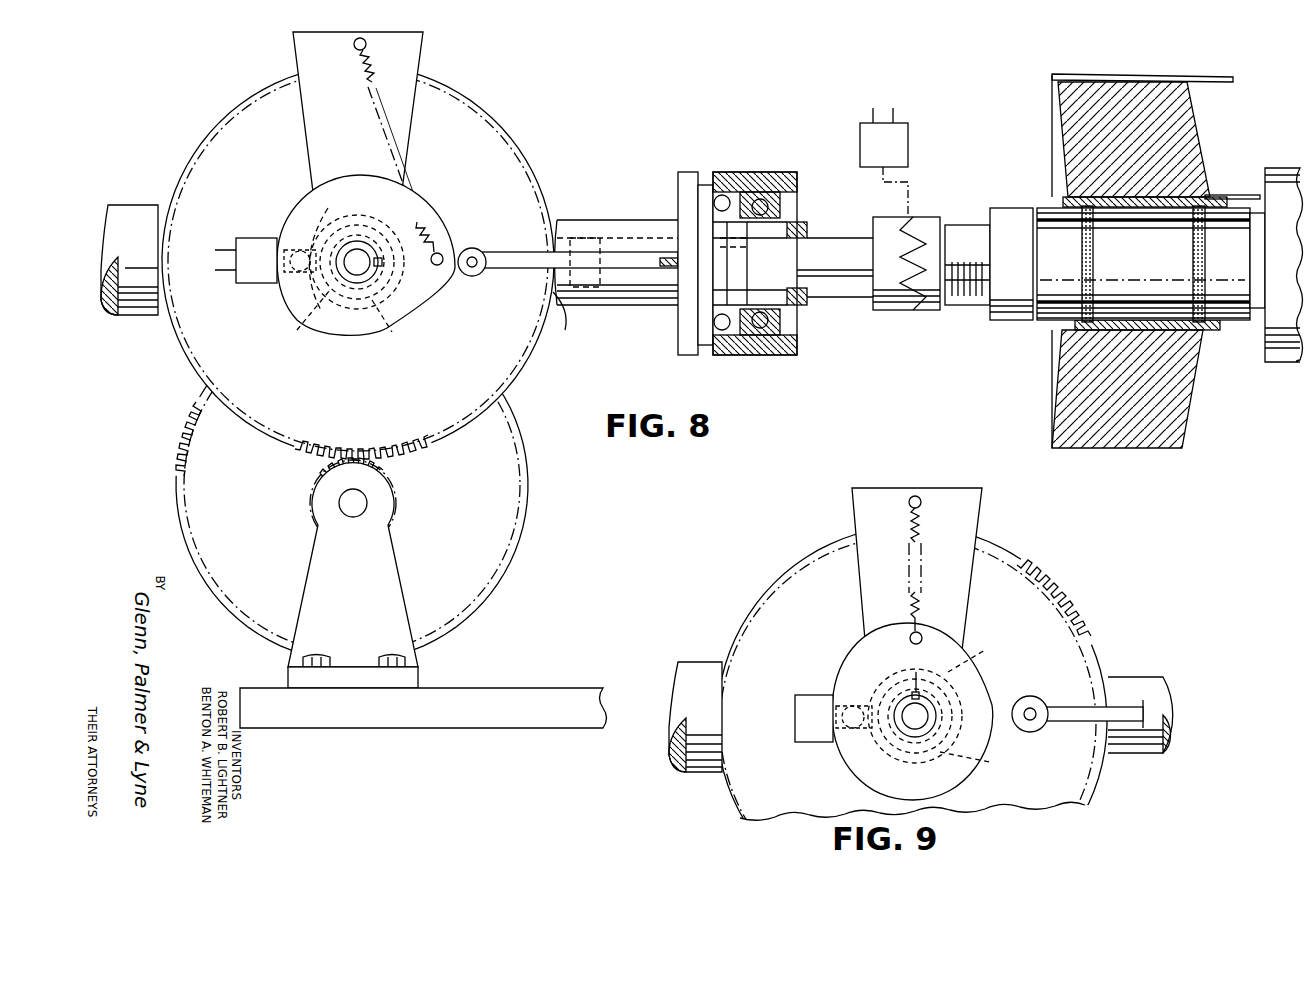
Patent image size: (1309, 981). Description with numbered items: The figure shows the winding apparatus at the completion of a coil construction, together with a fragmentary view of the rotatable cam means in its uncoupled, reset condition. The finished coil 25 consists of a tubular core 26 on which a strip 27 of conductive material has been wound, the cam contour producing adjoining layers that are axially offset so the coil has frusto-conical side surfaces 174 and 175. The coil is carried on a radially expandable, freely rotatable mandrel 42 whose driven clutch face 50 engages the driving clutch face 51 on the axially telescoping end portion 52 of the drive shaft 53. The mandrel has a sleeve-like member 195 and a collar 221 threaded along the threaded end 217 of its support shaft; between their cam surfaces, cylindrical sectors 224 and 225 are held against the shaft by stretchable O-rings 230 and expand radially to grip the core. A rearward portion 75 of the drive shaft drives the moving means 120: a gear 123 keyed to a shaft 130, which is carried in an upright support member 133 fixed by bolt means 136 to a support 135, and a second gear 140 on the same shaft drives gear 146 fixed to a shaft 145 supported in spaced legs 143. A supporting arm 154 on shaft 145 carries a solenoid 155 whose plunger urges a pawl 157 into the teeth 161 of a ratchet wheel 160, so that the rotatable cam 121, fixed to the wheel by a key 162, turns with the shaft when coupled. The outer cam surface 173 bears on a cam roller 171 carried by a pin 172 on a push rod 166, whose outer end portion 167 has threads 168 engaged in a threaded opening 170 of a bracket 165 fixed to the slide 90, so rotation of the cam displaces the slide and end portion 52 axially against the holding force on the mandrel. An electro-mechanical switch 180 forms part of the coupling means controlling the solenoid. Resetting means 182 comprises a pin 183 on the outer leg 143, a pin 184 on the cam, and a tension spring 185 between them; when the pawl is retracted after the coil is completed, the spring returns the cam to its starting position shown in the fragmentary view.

In FIG. 8, the coil 25 is at (1206, 432).
In FIG. 8, the core element 26 is at (1070, 327).
In FIG. 8, the strip 27 is at (1130, 448).
In FIG. 8, the mandrel 42 is at (1247, 163).
In FIG. 8, the driven clutch means 50 is at (940, 215).
In FIG. 8, the driving clutch means 51 is at (920, 300).
In FIG. 8, the axially telescoping end portion 52 is at (855, 240).
In FIG. 8, the drive shaft 53 is at (625, 222).
In FIG. 9, the drive shaft 53 is at (1155, 680).
In FIG. 8, the rearward portion 75 is at (140, 205).
In FIG. 9, the rearward portion 75 is at (700, 662).
In FIG. 8, the slide 90 is at (760, 172).
In FIG. 8, the moving means 120 is at (145, 507).
In FIG. 8, the rotatable mechanical cam 121 is at (292, 212).
In FIG. 9, the rotatable mechanical cam 121 is at (860, 668).
In FIG. 8, the gear 123 is at (510, 508).
In FIG. 8, the shaft 130 is at (355, 508).
In FIG. 8, the upwardly extending support member 133 is at (400, 600).
In FIG. 8, the support 135 is at (515, 700).
In FIG. 8, the bolt means 136 is at (315, 655).
In FIG. 8, the gear 140 is at (308, 502).
In FIG. 8, the supporting leg 143 is at (308, 126).
In FIG. 9, the supporting leg 143 is at (862, 585).
In FIG. 8, the shaft 145 is at (357, 270).
In FIG. 9, the shaft 145 is at (920, 714).
In FIG. 8, the gear 146 is at (500, 372).
In FIG. 9, the gear 146 is at (1065, 612).
In FIG. 8, the supporting arm 154 is at (282, 295).
In FIG. 9, the supporting arm 154 is at (835, 760).
In FIG. 8, the electrical solenoid 155 is at (255, 238).
In FIG. 9, the electrical solenoid 155 is at (795, 715).
In FIG. 8, the pawl 157 is at (356, 252).
In FIG. 9, the pawl 157 is at (842, 683).
In FIG. 8, the ratchet wheel 160 is at (390, 330).
In FIG. 9, the ratchet wheel 160 is at (960, 752).
In FIG. 8, the ratchet teeth 161 is at (300, 318).
In FIG. 9, the ratchet teeth 161 is at (960, 670).
In FIG. 8, the key 162 is at (384, 262).
In FIG. 9, the key 162 is at (916, 680).
In FIG. 8, the bracket 165 is at (690, 335).
In FIG. 8, the push rod 166 is at (565, 300).
In FIG. 9, the push rod 166 is at (1140, 708).
In FIG. 8, the outer end portion 167 is at (675, 292).
In FIG. 8, the threads 168 is at (660, 245).
In FIG. 8, the threaded opening 170 is at (752, 249).
In FIG. 8, the cam roller 171 is at (482, 255).
In FIG. 9, the cam roller 171 is at (1038, 705).
In FIG. 8, the pivot 172 is at (478, 270).
In FIG. 9, the pivot 172 is at (1035, 728).
In FIG. 8, the outer cam surface 173 is at (420, 302).
In FIG. 9, the outer cam surface 173 is at (955, 648).
In FIG. 8, the frusto-conical side surface 174 is at (1058, 160).
In FIG. 8, the frusto-conical side surface 175 is at (1205, 135).
In FIG. 8, the electro-mechanical switch 180 is at (910, 148).
In FIG. 8, the resetting means 182 is at (411, 145).
In FIG. 9, the resetting means 182 is at (935, 571).
In FIG. 8, the pin 183 is at (354, 44).
In FIG. 9, the pin 183 is at (908, 503).
In FIG. 8, the pin 184 is at (441, 252).
In FIG. 9, the pin 184 is at (921, 636).
In FIG. 8, the tension spring 185 is at (362, 80).
In FIG. 9, the tension spring 185 is at (913, 538).
In FIG. 8, the sleeve-like member 195 is at (1290, 365).
In FIG. 8, the threaded terminal outer end 217 is at (955, 240).
In FIG. 8, the collar 221 is at (1005, 208).
In FIG. 8, the cylindrical sector 224 is at (1060, 292).
In FIG. 8, the cylindrical sector 225 is at (1225, 215).
In FIG. 8, the O-ring 230 is at (1093, 244).